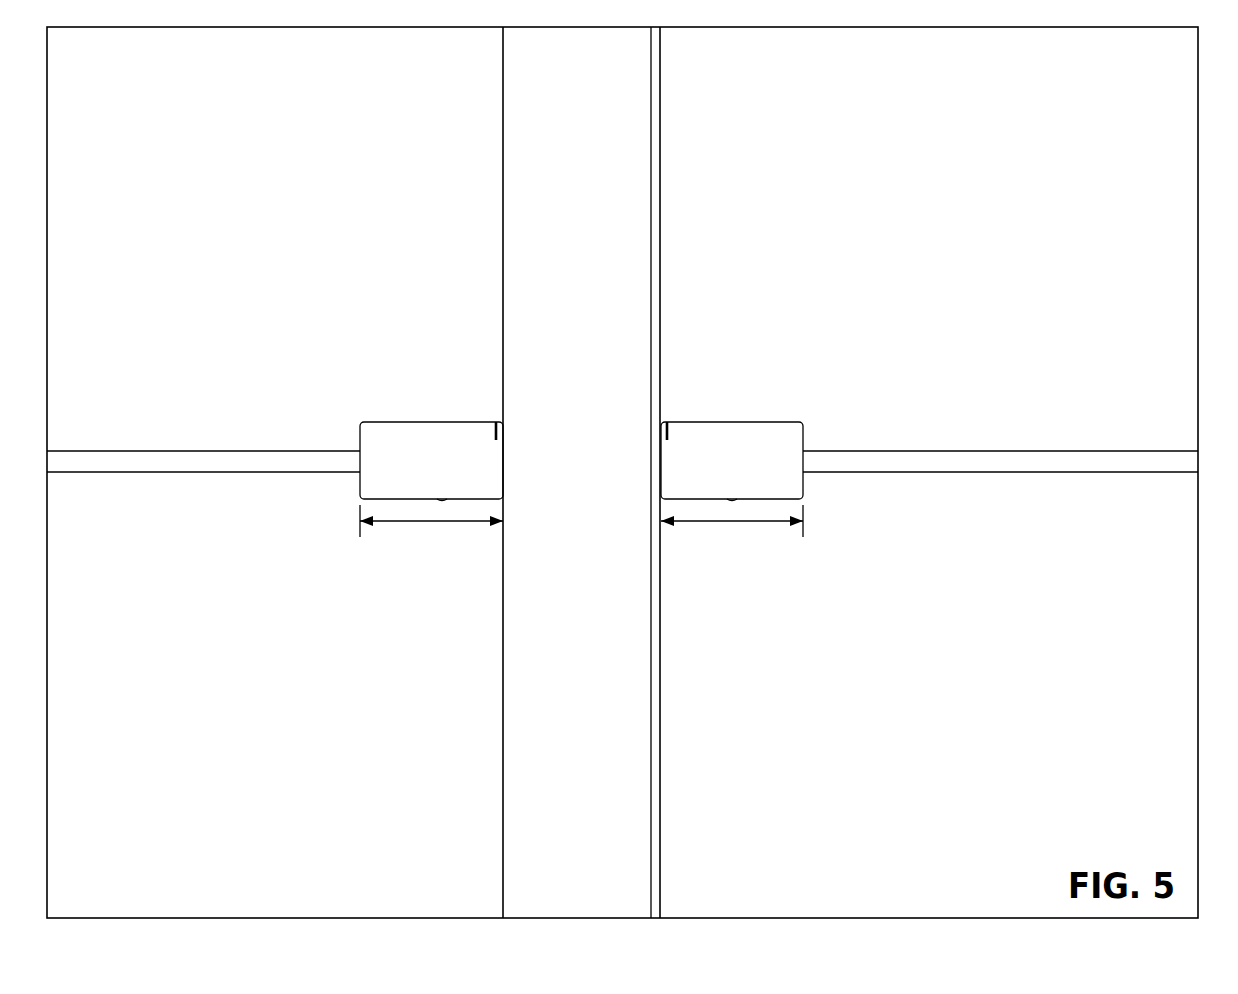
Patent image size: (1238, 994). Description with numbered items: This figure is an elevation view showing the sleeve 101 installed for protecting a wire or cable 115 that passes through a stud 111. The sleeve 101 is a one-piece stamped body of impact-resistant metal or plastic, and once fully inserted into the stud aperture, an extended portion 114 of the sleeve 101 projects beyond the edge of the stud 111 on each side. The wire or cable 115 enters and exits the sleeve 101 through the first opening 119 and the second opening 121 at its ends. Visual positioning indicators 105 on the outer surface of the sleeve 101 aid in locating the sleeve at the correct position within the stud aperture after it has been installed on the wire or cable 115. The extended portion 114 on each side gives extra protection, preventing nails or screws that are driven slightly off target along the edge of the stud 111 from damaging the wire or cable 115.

The sleeve 101 is at (765, 481).
The visual positioning indicators 105 is at (493, 432).
The stud 111 is at (600, 308).
The extended portion 114 is at (432, 523).
The wire or cable 115 is at (69, 462).
The first opening 119 is at (350, 482).
The second opening 121 is at (818, 487).